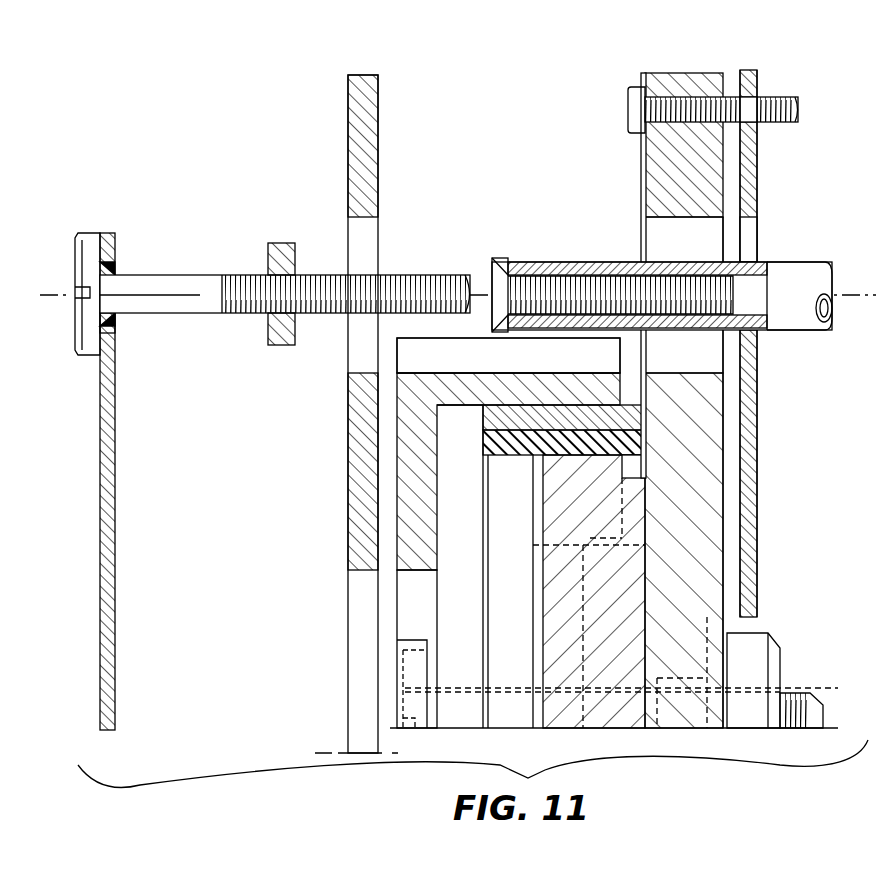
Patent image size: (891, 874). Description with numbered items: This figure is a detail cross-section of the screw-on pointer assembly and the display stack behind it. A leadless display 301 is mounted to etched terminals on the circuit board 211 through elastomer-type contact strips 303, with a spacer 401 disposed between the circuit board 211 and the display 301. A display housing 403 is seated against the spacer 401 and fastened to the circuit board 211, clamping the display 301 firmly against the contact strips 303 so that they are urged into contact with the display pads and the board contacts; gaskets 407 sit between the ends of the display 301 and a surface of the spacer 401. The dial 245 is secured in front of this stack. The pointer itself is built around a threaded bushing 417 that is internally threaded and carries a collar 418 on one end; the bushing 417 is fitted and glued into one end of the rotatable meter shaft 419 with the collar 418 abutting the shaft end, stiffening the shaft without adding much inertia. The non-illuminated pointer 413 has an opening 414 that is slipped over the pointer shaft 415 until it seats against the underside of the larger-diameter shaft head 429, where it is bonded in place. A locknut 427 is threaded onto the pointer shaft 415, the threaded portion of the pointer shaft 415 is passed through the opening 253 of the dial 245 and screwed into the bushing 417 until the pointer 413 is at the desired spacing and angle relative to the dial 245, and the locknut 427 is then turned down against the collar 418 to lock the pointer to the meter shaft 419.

The shaft head 429 is at (80, 236).
The non-illuminated pointer 413 is at (115, 232).
The pointer opening 414 is at (115, 315).
The pointer shaft 415 is at (242, 275).
The locknut 427 is at (272, 346).
The dial 245 is at (348, 140).
The dial opening 253 is at (352, 358).
The collar 418 is at (492, 262).
The threaded bushing 417 is at (590, 262).
The meter shaft 419 is at (810, 262).
The circuit board 211 is at (641, 180).
The display housing 403 is at (545, 372).
The elastomer-type contact strips 303 is at (645, 412).
The leadless display 301 is at (397, 438).
The spacer 401 is at (634, 526).
The gaskets 407 is at (540, 600).